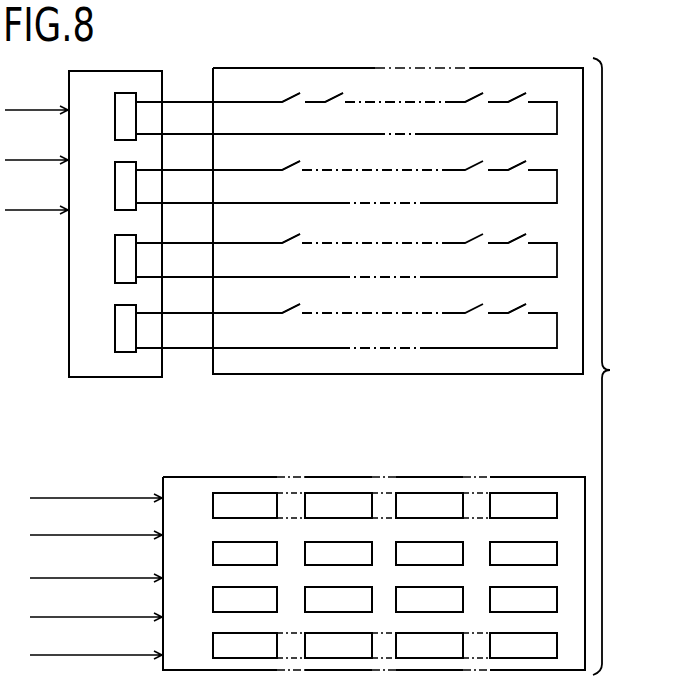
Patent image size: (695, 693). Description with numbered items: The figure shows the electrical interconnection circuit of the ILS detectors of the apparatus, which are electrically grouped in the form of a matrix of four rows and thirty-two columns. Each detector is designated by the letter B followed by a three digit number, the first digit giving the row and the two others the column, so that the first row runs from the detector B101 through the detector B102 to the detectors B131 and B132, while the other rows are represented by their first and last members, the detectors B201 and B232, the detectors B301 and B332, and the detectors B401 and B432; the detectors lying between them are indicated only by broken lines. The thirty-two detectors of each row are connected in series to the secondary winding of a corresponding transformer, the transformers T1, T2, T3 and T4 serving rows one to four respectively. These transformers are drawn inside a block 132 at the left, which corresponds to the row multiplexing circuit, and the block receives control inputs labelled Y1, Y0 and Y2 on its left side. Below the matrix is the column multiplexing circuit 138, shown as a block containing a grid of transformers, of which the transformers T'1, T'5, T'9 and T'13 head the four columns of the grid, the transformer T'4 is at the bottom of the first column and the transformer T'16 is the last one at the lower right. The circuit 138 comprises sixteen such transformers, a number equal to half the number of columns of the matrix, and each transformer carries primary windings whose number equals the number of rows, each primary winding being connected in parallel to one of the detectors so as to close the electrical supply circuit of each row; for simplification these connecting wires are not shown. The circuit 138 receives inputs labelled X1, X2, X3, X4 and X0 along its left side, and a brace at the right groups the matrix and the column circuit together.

The row decoder 132 is at (133, 70).
The column multiplexing circuit 138 is at (178, 477).
The transformer T1 is at (115, 120).
The transformer T2 is at (115, 190).
The transformer T3 is at (115, 264).
The transformer T4 is at (115, 334).
The address input Y1 is at (36, 101).
The address input Y0 is at (36, 151).
The address input Y2 is at (36, 201).
The address input X1 is at (96, 489).
The address input X2 is at (96, 526).
The address input X3 is at (96, 569).
The address input X4 is at (96, 608).
The address input X0 is at (96, 646).
The detector B101 is at (296, 114).
The detector B102 is at (340, 103).
The detector B131 is at (478, 113).
The detector B132 is at (522, 113).
The detector B201 is at (302, 188).
The detector B232 is at (524, 183).
The detector B301 is at (296, 256).
The detector B332 is at (524, 256).
The detector B401 is at (296, 326).
The detector B432 is at (524, 326).
The transformer T'1 is at (245, 484).
The transformer T'4 is at (224, 647).
The transformer T'5 is at (338, 484).
The transformer T'9 is at (429, 484).
The transformer T'13 is at (523, 484).
The transformer T'16 is at (571, 646).